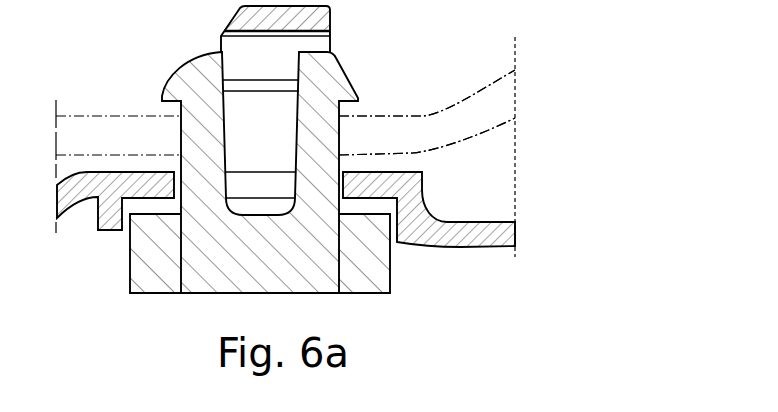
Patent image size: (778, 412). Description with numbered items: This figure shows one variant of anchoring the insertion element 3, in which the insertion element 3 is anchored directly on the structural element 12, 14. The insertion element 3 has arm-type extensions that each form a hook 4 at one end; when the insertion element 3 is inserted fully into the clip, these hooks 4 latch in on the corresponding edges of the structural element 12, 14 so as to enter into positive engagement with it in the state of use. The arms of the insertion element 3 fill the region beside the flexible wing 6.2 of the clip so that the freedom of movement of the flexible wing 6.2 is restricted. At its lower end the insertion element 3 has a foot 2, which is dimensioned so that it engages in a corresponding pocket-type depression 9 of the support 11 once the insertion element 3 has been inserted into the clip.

The foot 2 is at (363, 267).
The insertion element 3 is at (209, 302).
The hooks 4 is at (187, 92).
The flexible wing 6.2 is at (282, 118).
The pocket-type depression 9 is at (140, 206).
The support 11 is at (500, 232).
The structural element 12 is at (482, 112).
The structural element 14 is at (495, 103).